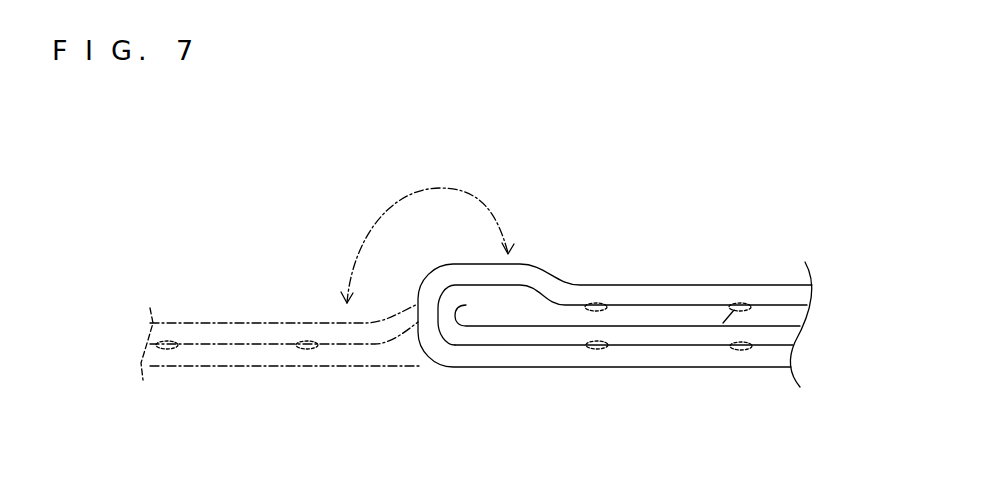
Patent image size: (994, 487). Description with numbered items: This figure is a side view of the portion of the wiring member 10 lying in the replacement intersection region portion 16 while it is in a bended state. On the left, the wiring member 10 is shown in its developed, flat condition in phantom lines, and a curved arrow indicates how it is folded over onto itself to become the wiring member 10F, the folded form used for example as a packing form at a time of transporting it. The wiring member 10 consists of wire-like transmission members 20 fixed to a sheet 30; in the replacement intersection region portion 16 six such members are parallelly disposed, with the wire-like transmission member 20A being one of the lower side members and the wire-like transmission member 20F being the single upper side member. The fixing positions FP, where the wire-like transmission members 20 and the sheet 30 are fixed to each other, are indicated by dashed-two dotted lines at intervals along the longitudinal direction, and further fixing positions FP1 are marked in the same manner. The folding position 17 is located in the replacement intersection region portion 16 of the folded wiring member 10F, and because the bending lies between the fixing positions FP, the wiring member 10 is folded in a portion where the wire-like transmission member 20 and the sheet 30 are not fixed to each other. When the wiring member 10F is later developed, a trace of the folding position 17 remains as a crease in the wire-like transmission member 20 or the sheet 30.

The wiring member 10 is at (316, 430).
The wiring member in folded state 10F is at (778, 226).
The sheet 30 is at (195, 360).
The wire-like transmission member 20F is at (252, 360).
The wire-like transmission member 20 is at (515, 329).
The wire-like transmission member 20A is at (656, 338).
The replacement intersection region portion 16 is at (513, 328).
The folding position 17 is at (419, 305).
The fixing position FP is at (595, 349).
The first fold position FP1 is at (169, 340).